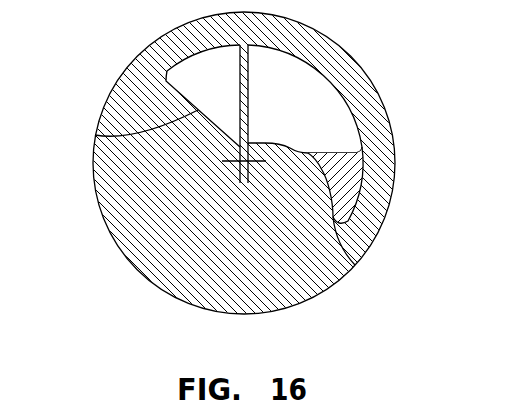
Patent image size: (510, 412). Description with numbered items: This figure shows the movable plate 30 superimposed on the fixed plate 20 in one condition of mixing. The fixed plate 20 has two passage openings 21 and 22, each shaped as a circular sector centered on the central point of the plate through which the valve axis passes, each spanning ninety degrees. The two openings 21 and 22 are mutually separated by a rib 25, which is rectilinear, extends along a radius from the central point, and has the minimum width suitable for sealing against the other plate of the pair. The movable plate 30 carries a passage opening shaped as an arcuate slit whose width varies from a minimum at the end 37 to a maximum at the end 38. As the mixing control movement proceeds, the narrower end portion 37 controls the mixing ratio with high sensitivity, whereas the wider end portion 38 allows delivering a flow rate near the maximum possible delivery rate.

The fixed plate 20 is at (348, 188).
The passage opening 21 is at (198, 80).
The passage opening 22 is at (298, 80).
The rib 25 is at (237, 63).
The movable plate 30 is at (163, 240).
The end of passage opening 37 is at (355, 265).
The end of passage opening 38 is at (95, 135).